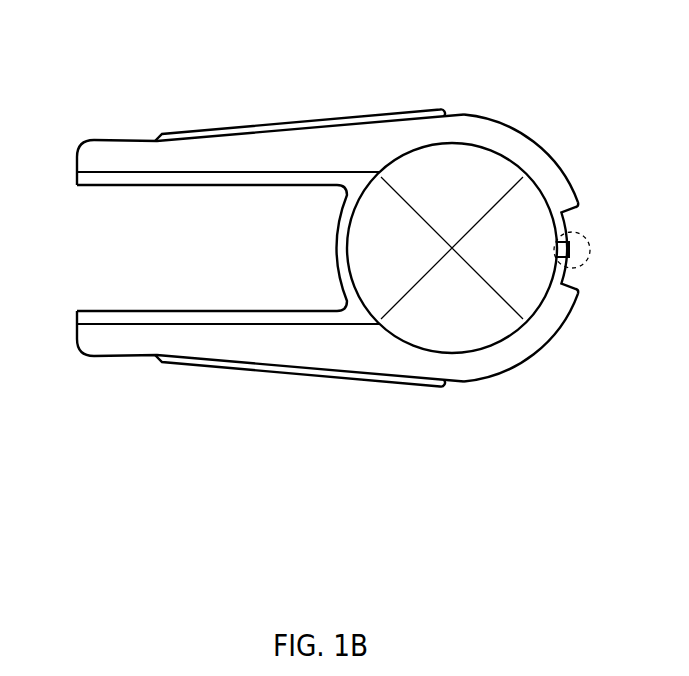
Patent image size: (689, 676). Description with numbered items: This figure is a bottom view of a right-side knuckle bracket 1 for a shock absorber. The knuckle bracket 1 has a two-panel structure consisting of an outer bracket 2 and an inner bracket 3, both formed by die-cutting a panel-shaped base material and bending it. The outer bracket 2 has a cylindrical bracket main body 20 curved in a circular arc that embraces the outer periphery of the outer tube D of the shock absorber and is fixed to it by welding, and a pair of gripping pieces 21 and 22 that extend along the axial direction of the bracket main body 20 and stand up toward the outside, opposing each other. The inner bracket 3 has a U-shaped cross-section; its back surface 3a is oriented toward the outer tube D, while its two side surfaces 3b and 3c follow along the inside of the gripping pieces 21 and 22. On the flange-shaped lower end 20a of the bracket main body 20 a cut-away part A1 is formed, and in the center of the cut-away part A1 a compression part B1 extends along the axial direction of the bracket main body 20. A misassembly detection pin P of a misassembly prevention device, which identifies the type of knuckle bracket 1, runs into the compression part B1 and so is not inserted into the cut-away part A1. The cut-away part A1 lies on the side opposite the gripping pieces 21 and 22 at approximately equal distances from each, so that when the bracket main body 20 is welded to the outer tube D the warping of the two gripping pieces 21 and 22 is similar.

The knuckle bracket 1 is at (88, 105).
The outer bracket 2 is at (449, 403).
The inner bracket 3 is at (124, 195).
The back surface 3a is at (345, 236).
The side surface 3b is at (139, 316).
The side surface 3c is at (217, 178).
The bracket main body 20 is at (524, 114).
The lower end 20a is at (521, 352).
The gripping piece 21 is at (237, 371).
The gripping piece 22 is at (254, 128).
The cut-away part A1 is at (579, 204).
The compression part B1 is at (553, 250).
The outer tube D is at (460, 143).
The misassembly detection pin P is at (588, 255).